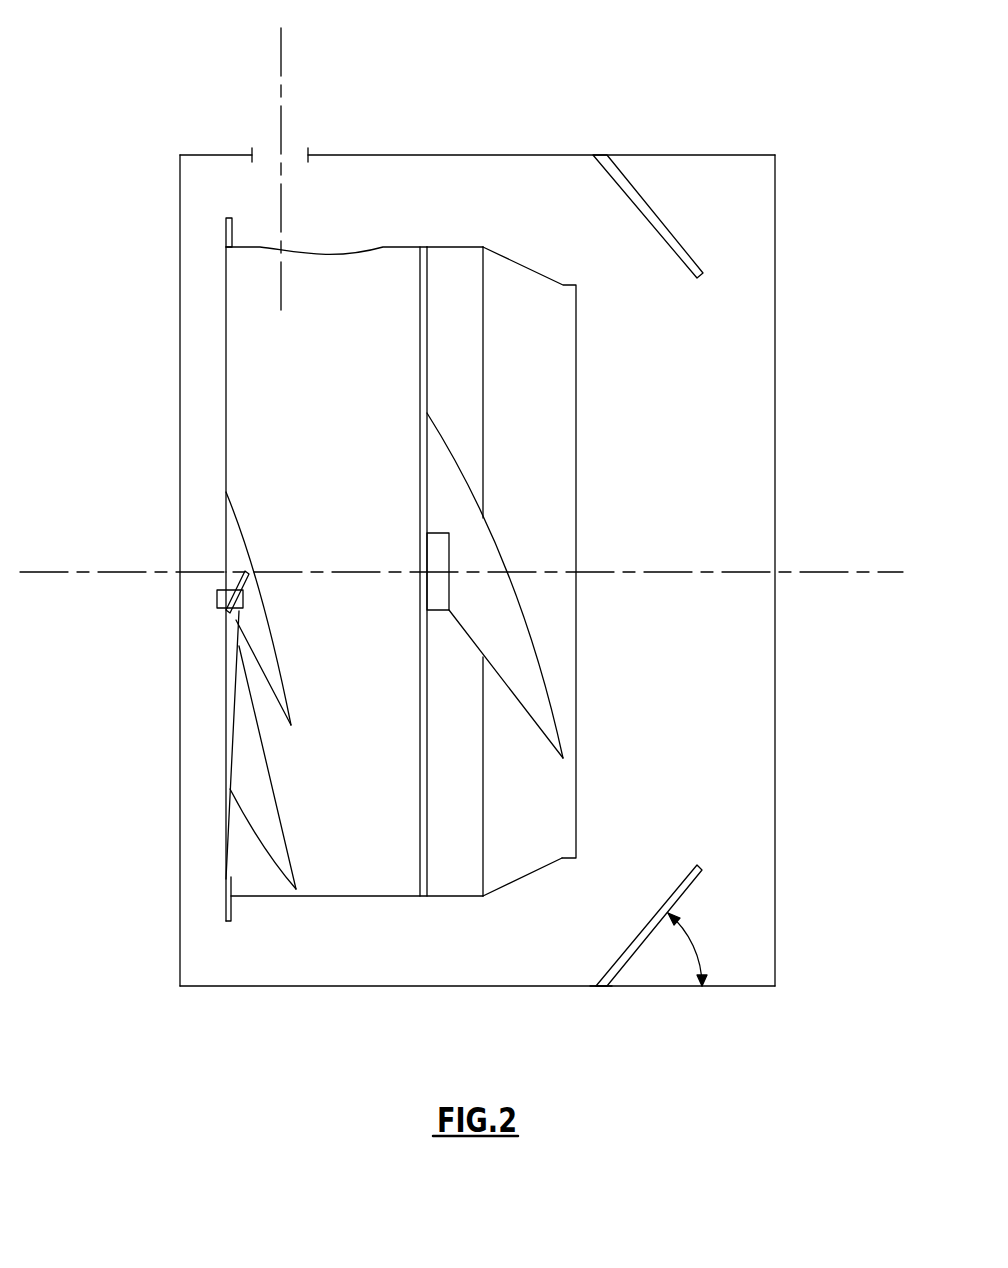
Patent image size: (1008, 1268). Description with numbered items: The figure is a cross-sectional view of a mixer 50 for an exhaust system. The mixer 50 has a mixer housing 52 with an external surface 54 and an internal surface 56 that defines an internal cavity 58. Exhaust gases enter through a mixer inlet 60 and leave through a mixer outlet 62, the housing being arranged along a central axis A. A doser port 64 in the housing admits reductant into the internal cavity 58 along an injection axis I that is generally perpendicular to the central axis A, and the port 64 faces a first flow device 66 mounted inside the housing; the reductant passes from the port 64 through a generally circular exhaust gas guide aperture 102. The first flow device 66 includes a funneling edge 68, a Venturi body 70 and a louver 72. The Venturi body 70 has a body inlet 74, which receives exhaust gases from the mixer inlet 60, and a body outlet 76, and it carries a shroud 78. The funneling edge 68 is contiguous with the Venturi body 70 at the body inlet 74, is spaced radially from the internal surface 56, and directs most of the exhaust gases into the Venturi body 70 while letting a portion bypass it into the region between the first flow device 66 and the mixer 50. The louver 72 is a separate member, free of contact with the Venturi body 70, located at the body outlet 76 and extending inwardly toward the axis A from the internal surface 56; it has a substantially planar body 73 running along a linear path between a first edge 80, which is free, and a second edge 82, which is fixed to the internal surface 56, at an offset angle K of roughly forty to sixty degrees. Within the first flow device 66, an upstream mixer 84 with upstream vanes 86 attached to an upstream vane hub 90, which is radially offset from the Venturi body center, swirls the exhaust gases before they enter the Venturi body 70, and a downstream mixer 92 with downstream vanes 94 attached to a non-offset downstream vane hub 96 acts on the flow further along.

The mixer 50 is at (126, 114).
The mixer housing 52 is at (220, 986).
The external surface 54 is at (637, 155).
The internal surface 56 is at (722, 986).
The internal cavity 58 is at (630, 550).
The mixer inlet 60 is at (180, 305).
The mixer outlet 62 is at (775, 262).
The doser port 64 is at (292, 157).
The first flow device 66 is at (190, 447).
The funneling edge 68 is at (225, 866).
The Venturi body 70 is at (346, 896).
The louver 72 is at (614, 957).
The planar body 73 is at (652, 925).
The body inlet 74 is at (225, 367).
The body outlet 76 is at (576, 510).
The shroud 78 is at (517, 880).
The first edge 80 is at (702, 870).
The second edge 82 is at (600, 986).
The upstream mixer 84 is at (205, 787).
The upstream vanes 86 is at (278, 637).
The upstream vane hub 90 is at (217, 598).
The downstream mixer 92 is at (600, 370).
The downstream vanes 94 is at (503, 640).
The downstream vane hub 96 is at (440, 558).
The exhaust gas guide aperture 102 is at (330, 248).
The injection axis I is at (281, 55).
The central axis A is at (852, 572).
The offset angle K is at (685, 949).